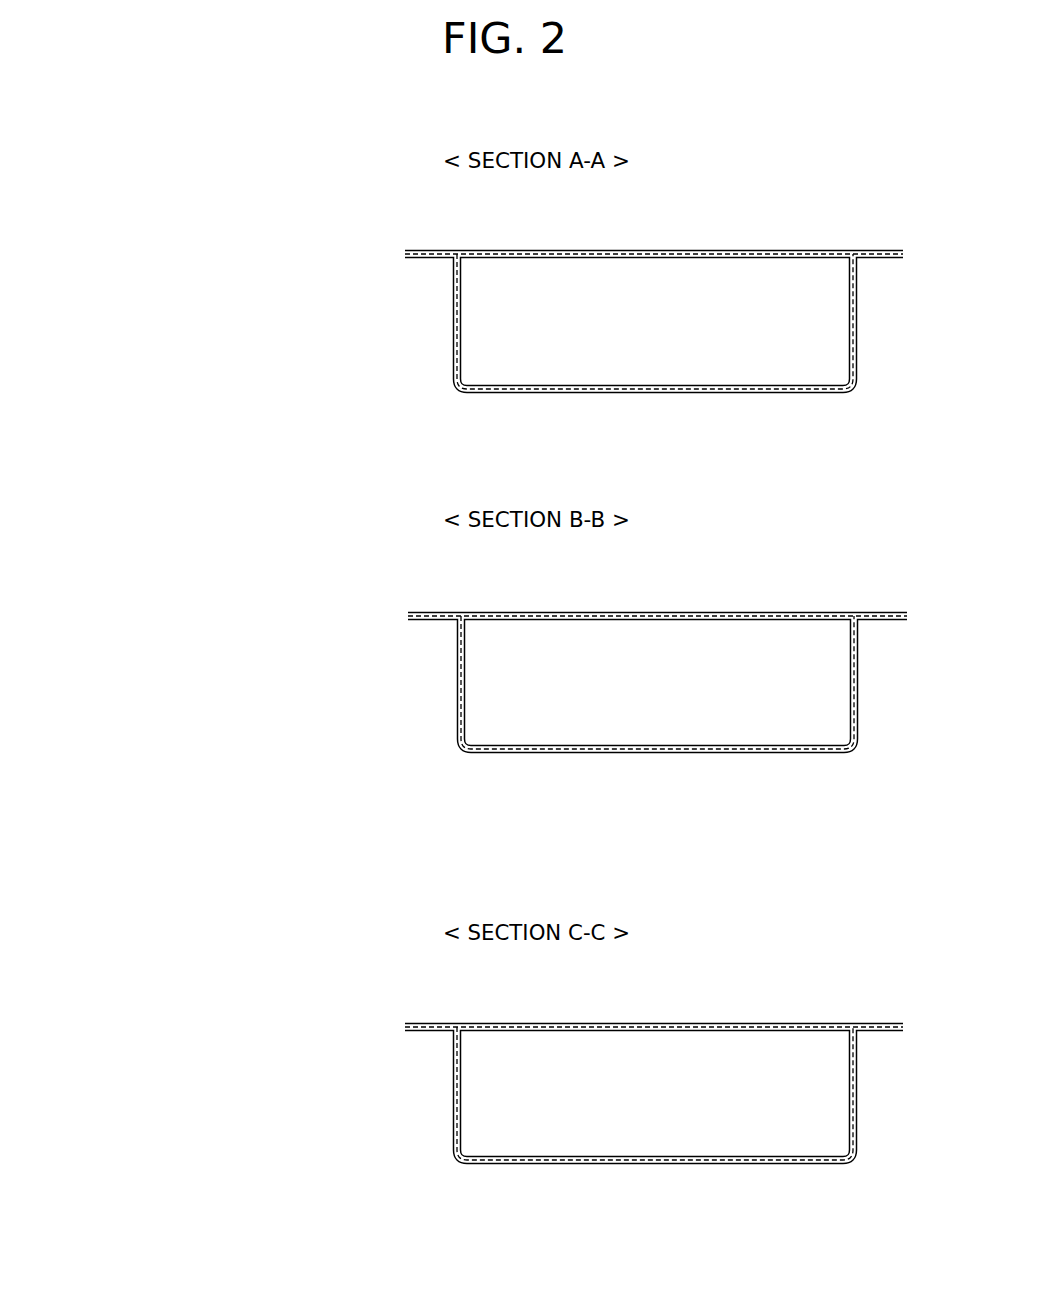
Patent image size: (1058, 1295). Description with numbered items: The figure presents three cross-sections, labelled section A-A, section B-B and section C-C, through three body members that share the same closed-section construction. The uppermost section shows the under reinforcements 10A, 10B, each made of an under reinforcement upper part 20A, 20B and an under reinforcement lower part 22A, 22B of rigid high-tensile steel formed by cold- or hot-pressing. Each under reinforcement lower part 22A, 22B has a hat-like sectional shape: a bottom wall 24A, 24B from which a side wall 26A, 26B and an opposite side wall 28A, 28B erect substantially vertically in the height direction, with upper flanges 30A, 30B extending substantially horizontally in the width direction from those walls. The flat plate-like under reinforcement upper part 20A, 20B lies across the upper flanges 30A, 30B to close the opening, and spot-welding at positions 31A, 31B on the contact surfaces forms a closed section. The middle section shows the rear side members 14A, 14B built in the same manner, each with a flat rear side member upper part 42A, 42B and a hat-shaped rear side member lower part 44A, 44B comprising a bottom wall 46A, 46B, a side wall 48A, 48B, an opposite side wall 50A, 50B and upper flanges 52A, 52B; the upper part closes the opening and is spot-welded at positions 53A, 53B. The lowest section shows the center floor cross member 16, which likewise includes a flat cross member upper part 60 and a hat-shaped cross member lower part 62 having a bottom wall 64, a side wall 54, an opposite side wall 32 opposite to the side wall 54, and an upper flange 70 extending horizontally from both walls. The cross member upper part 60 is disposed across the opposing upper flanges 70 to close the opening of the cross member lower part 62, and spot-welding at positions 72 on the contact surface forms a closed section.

The under reinforcement 10A is at (498, 289).
The under reinforcement 10B is at (175, 226).
The under reinforcement upper part 20A is at (329, 223).
The under reinforcement upper part 20B is at (487, 250).
The under reinforcement lower part 22A is at (297, 320).
The under reinforcement lower part 22B is at (423, 323).
The bottom wall 24A is at (575, 358).
The bottom wall 24B is at (570, 386).
The side wall 26A is at (520, 311).
The side wall 26B is at (463, 311).
The opposite side wall 28A is at (777, 314).
The opposite side wall 28B is at (847, 328).
The upper flange 30A is at (647, 285).
The upper flange 30B is at (440, 260).
The spot-welding position 31A is at (607, 231).
The spot-welding position 31B is at (428, 249).
The rear side member 14A is at (501, 649).
The rear side member 14B is at (178, 589).
The rear side member upper part 42A is at (333, 585).
The rear side member upper part 42B is at (487, 612).
The rear side member lower part 44A is at (303, 681).
The rear side member lower part 44B is at (427, 685).
The bottom wall 46A is at (577, 720).
The bottom wall 46B is at (575, 747).
The side wall 48A is at (523, 673).
The side wall 48B is at (466, 673).
The opposite side wall 50A is at (780, 675).
The opposite side wall 50B is at (850, 690).
The upper flange 52A is at (654, 647).
The upper flange 52B is at (443, 622).
The spot-welding position 53A is at (609, 592).
The spot-welding position 53B is at (430, 612).
The center floor cross member 16 is at (202, 1001).
The cross member upper part 60 is at (487, 1023).
The cross member lower part 62 is at (423, 1095).
The bottom wall 64 is at (570, 1158).
The opposite side wall 32 is at (463, 1085).
The side wall 54 is at (847, 1098).
The upper flange 70 is at (440, 1037).
The spot-welding position 72 is at (427, 1023).